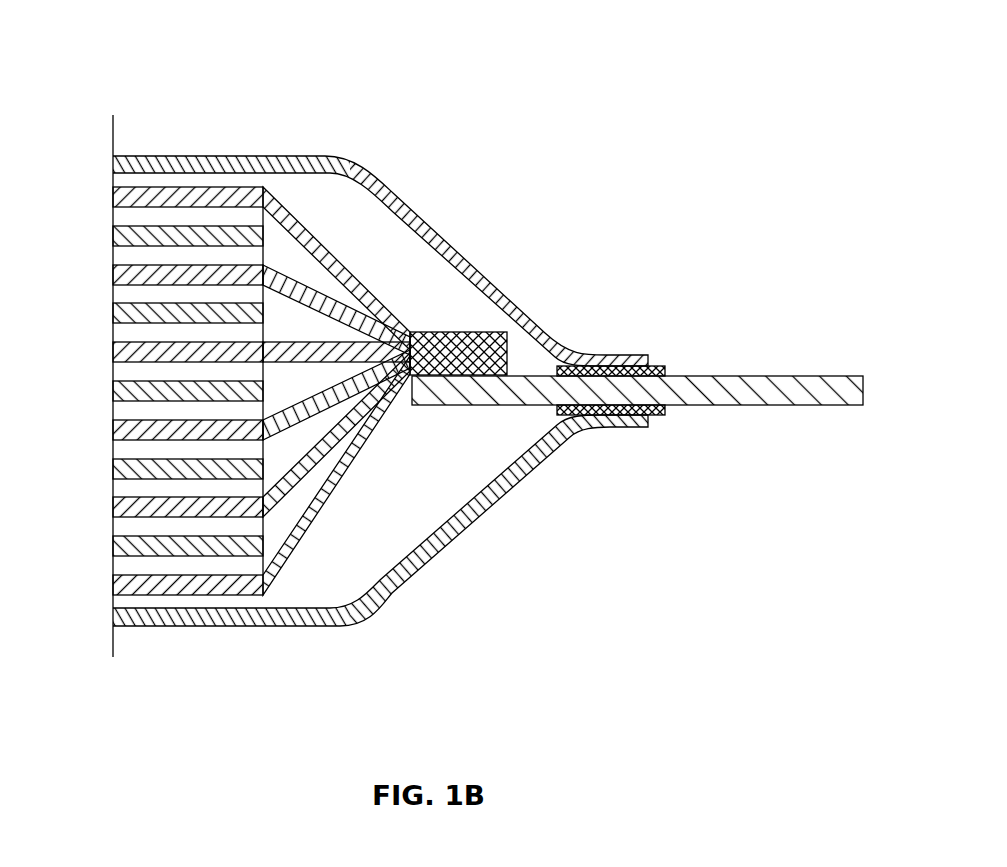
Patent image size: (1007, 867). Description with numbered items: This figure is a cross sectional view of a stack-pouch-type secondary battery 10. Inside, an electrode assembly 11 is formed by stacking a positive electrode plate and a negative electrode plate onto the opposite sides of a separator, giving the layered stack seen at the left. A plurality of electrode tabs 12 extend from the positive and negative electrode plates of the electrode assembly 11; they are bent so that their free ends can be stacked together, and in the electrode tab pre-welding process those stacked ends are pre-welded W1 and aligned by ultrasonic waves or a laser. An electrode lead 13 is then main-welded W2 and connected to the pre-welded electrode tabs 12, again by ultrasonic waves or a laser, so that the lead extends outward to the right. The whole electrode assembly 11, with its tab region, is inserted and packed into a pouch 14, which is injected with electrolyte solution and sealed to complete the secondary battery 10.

The secondary battery 10 is at (198, 96).
The electrode assembly 11 is at (97, 188).
The electrode tabs 12 is at (343, 306).
The electrode lead 13 is at (752, 376).
The pouch 14 is at (297, 155).
The pre-weld W1 is at (452, 332).
The main-weld W2 is at (453, 377).